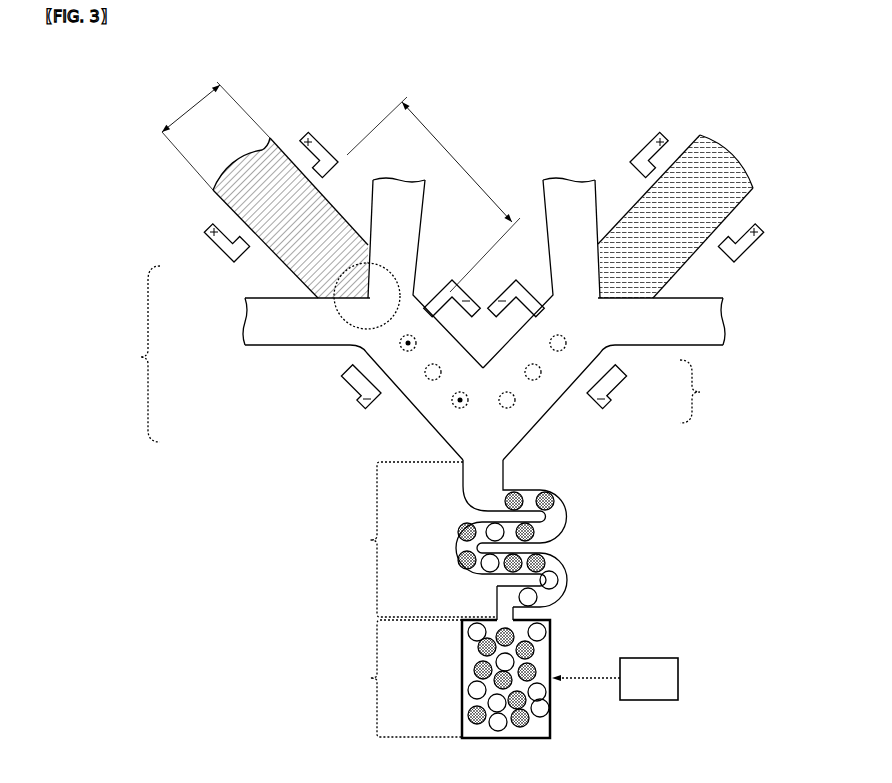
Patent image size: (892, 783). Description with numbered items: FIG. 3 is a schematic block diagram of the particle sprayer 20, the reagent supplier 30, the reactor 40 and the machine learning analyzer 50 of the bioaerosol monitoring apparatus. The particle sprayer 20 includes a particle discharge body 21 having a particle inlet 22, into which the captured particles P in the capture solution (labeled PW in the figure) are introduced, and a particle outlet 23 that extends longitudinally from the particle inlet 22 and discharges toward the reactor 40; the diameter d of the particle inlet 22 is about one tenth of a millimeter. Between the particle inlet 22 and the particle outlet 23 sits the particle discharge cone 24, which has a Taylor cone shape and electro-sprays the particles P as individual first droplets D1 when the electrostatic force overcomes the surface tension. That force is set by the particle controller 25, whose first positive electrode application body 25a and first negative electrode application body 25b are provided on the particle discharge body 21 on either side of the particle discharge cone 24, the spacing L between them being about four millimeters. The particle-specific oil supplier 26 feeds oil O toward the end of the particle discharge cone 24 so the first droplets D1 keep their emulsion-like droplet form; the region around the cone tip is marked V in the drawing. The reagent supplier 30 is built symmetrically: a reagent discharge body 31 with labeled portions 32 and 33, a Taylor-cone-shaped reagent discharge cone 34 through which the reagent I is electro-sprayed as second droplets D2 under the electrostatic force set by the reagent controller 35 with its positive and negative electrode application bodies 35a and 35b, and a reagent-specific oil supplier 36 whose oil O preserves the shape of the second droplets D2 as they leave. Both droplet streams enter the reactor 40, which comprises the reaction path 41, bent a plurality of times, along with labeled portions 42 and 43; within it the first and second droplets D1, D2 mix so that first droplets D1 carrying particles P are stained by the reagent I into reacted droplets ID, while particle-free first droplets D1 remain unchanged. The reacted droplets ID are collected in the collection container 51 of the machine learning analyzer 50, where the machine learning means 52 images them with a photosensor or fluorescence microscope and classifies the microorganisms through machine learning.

The particle sprayer 20 is at (190, 213).
The particle discharge body 21 is at (330, 203).
The particle inlet 22 is at (260, 145).
The particle outlet 23 is at (425, 412).
The particle discharge cone 24 is at (416, 274).
The particle controller 25 is at (248, 287).
The first positive electrode application body 25a is at (218, 254).
The first negative electrode application body 25b is at (356, 400).
The particle-specific oil supplier 26 is at (286, 297).
The reagent supplier 30 is at (776, 211).
The reagent discharge body 31 is at (636, 206).
The second fluid 32 is at (703, 147).
The second branch channel 33 is at (547, 409).
The reagent discharge cone 34 is at (552, 276).
The reagent controller 35 is at (675, 277).
The positive electrode application body 35a is at (720, 248).
The negative electrode application body 35b is at (624, 395).
The reagent-specific oil supplier 36 is at (549, 242).
The reactor 40 is at (473, 540).
The reaction path 41 is at (564, 520).
The merging channel 42 is at (492, 462).
The outlet channel 43 is at (493, 612).
The machine learning analyzer 50 is at (515, 679).
The collection container 51 is at (553, 660).
The machine learning means 52 is at (650, 658).
The pure water PW is at (248, 175).
The reagent I is at (716, 174).
The oil O is at (400, 205).
The first droplet D1 is at (442, 366).
The second droplet D2 is at (513, 408).
The reacted droplet ID is at (554, 497).
The particle P is at (455, 410).
The velocity region V is at (343, 335).
The spacing L is at (433, 194).
The diameter d is at (216, 136).